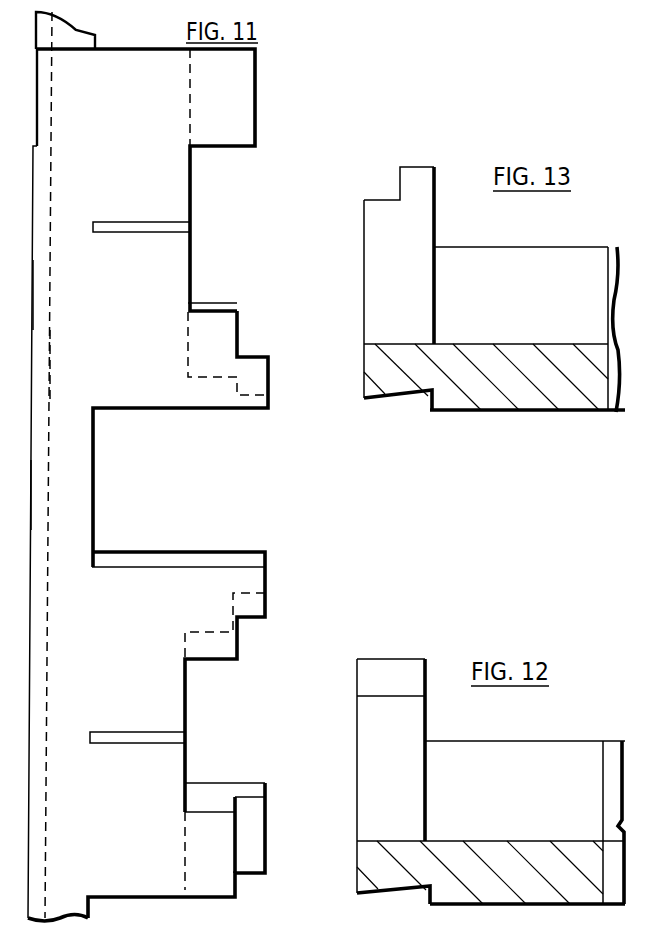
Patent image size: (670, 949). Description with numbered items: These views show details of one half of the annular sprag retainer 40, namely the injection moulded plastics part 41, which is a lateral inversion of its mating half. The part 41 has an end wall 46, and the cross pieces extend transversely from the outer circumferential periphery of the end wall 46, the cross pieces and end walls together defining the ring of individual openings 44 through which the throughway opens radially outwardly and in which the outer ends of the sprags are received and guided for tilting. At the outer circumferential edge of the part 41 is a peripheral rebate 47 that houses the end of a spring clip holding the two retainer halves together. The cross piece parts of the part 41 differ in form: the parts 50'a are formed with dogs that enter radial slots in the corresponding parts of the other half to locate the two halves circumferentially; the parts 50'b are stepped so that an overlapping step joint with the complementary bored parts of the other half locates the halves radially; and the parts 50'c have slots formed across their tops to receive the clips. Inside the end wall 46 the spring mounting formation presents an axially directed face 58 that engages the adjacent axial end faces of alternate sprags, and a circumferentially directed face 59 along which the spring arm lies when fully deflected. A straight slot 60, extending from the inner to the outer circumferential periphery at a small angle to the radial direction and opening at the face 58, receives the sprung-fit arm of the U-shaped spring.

In FIG. 11, the sprag retainer 40 is at (44, 300).
In FIG. 13, the sprag retainer 40 is at (500, 404).
In FIG. 12, the sprag retainer 40 is at (512, 896).
In FIG. 11, the annular injection moulded plastics part 41 is at (40, 361).
In FIG. 13, the annular injection moulded plastics part 41 is at (371, 370).
In FIG. 12, the annular injection moulded plastics part 41 is at (460, 896).
In FIG. 11, the opening 44 is at (226, 226).
In FIG. 13, the opening 44 is at (394, 304).
In FIG. 12, the opening 44 is at (389, 771).
In FIG. 11, the end wall 46 is at (40, 491).
In FIG. 13, the end wall 46 is at (565, 401).
In FIG. 12, the end wall 46 is at (583, 896).
In FIG. 13, the peripheral rebate 47 is at (405, 406).
In FIG. 12, the peripheral rebate 47 is at (405, 898).
In FIG. 11, the cross piece part with dog 50'a is at (265, 486).
In FIG. 12, the cross piece part with dog 50'a is at (408, 725).
In FIG. 11, the stepped cross piece part 50'b is at (180, 852).
In FIG. 13, the stepped cross piece part 50'b is at (384, 249).
In FIG. 11, the slotted cross piece part 50'c is at (180, 180).
In FIG. 11, the axially directed face 58 is at (192, 181).
In FIG. 13, the axially directed face 58 is at (528, 247).
In FIG. 12, the axially directed face 58 is at (507, 741).
In FIG. 13, the circumferentially directed face 59 is at (543, 289).
In FIG. 12, the circumferentially directed face 59 is at (543, 776).
In FIG. 11, the straight slot 60 is at (148, 222).